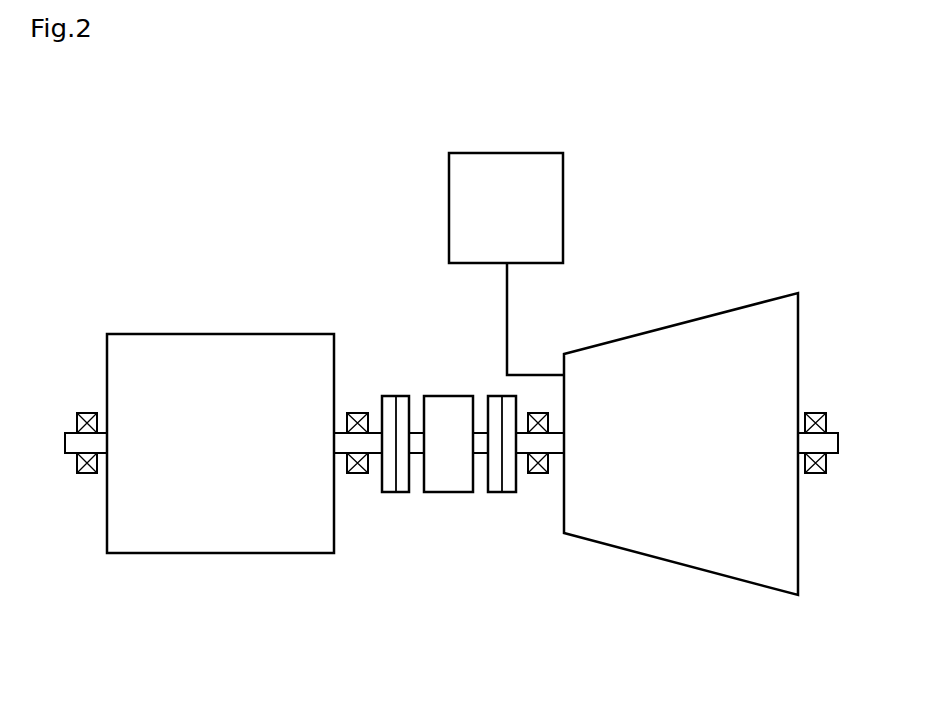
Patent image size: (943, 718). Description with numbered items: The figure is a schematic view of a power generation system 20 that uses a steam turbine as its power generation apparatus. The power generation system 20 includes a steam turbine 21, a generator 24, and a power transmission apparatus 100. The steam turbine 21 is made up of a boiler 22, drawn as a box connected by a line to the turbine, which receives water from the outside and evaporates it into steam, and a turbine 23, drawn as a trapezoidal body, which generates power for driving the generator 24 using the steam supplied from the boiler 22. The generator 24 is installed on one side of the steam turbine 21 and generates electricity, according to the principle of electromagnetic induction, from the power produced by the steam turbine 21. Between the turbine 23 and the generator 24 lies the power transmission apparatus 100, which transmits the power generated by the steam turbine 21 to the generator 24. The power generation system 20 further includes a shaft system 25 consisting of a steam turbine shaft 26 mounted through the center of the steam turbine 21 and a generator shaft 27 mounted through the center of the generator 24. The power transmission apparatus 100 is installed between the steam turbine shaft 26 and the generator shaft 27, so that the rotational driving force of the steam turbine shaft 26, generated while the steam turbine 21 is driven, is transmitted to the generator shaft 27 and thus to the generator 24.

The power generation system 20 is at (116, 187).
The steam turbine 21 is at (768, 120).
The boiler 22 is at (563, 178).
The turbine 23 is at (700, 318).
The generator 24 is at (209, 334).
The shaft system 25 is at (528, 622).
The steam turbine shaft 26 is at (530, 442).
The generator shaft 27 is at (348, 445).
The power transmission apparatus 100 is at (447, 396).